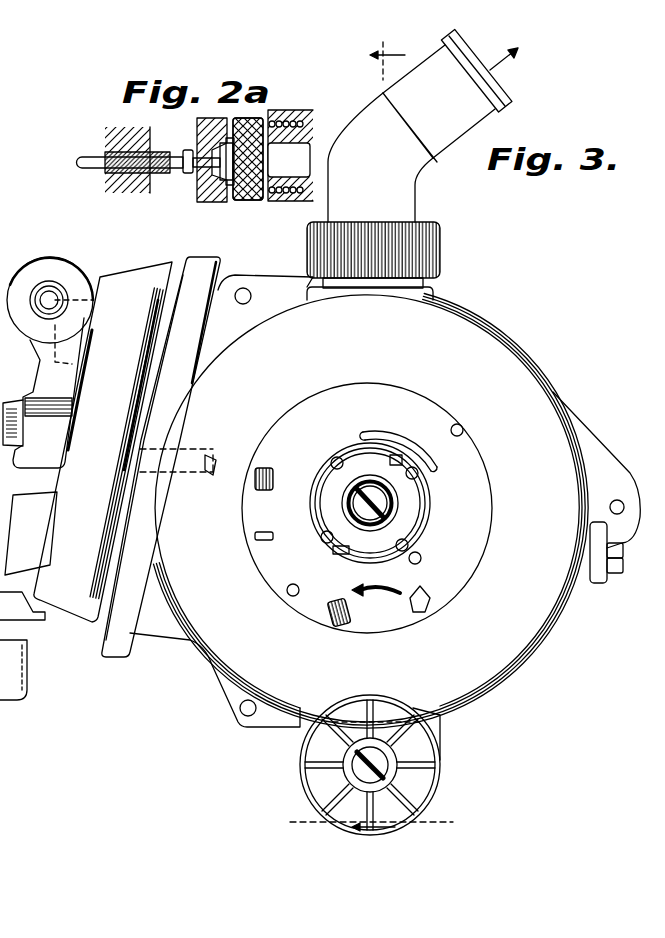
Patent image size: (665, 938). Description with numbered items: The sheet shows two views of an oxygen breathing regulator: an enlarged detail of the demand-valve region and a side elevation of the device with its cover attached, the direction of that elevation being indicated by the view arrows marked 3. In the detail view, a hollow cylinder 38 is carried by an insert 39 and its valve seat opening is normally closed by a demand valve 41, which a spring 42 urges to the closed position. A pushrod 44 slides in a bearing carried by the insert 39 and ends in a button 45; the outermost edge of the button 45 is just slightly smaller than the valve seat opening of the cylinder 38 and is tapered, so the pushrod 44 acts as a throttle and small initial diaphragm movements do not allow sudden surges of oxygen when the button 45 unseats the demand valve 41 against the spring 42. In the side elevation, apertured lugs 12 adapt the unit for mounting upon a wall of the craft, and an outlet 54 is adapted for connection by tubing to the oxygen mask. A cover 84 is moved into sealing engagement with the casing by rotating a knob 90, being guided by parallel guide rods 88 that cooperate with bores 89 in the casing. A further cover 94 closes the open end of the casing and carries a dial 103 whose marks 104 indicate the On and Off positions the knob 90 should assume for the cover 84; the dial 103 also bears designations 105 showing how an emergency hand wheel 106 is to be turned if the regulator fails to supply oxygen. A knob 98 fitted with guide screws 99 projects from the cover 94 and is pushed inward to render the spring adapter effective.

In FIG. 3, the section line 3- 3 is at (371, 442).
In FIG. 3, the apertured lugs 12 is at (243, 282).
In FIG. 2A, the hollow cylinder 38 is at (213, 198).
In FIG. 2A, the insert 39 is at (110, 173).
In FIG. 2A, the demand valve 41 is at (246, 199).
In FIG. 2A, the spring 42 is at (284, 199).
In FIG. 2A, the pushrod 44 is at (82, 156).
In FIG. 2A, the button 45 is at (220, 153).
In FIG. 3, the outlet 54 is at (404, 178).
In FIG. 3, the cover 84 is at (114, 275).
In FIG. 3, the guide rods 88 is at (150, 449).
In FIG. 3, the bores 89 is at (213, 462).
In FIG. 3, the knob 90 is at (58, 252).
In FIG. 3, the cover 94 is at (404, 346).
In FIG. 3, the knob 98 is at (352, 490).
In FIG. 3, the guide screws 99 is at (395, 455).
In FIG. 3, the dial 103 is at (443, 415).
In FIG. 3, the marks 104 is at (257, 537).
In FIG. 3, the designations 105 is at (417, 600).
In FIG. 3, the emergency hand wheel 106 is at (407, 763).